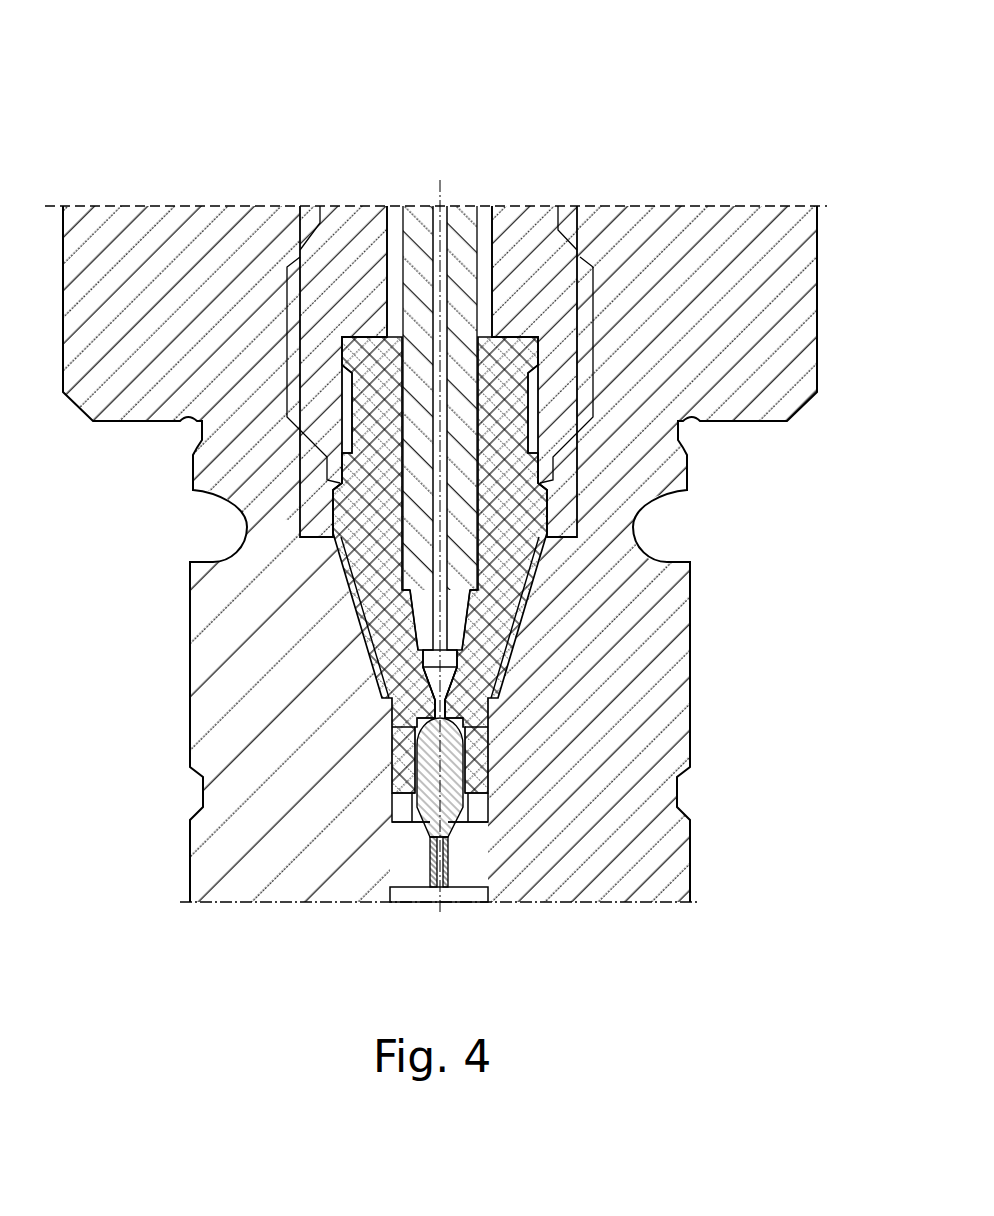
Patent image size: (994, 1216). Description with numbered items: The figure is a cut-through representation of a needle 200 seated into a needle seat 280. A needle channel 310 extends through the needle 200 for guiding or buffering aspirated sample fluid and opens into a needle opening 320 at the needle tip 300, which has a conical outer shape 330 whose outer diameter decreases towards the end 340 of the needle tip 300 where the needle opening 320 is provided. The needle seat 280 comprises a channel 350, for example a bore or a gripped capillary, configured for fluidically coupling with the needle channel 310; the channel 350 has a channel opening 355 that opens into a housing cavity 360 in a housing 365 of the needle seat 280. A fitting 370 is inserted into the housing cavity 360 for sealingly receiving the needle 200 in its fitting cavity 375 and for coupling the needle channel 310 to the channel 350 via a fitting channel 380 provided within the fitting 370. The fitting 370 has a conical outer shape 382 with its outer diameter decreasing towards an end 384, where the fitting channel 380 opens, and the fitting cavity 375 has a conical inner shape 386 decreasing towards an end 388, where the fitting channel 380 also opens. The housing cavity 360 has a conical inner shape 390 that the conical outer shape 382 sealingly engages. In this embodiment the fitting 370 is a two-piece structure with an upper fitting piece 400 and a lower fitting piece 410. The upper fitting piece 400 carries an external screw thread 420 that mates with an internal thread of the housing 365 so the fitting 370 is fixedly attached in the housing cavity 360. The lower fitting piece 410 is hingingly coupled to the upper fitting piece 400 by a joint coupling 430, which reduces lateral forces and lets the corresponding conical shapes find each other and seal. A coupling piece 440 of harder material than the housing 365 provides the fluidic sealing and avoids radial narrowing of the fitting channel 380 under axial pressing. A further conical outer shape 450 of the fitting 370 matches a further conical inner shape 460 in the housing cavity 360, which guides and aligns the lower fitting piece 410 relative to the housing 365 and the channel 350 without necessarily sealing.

The needle 200 is at (462, 210).
The needle seat 280 is at (715, 90).
The needle tip 300 is at (452, 568).
The needle channel 310 is at (443, 208).
The needle opening 320 is at (497, 712).
The conical outer shape 330 is at (387, 534).
The end of the needle tip 340 is at (433, 637).
The channel 350 is at (443, 893).
The channel opening 355 is at (443, 838).
The housing cavity 360 is at (306, 213).
The housing 365 is at (122, 408).
The fitting 370 is at (357, 213).
The fitting cavity 375 is at (395, 213).
The fitting channel 380 is at (492, 744).
The conical outer shape 382 is at (453, 827).
The end of the fitting 384 is at (430, 668).
The conical inner shape 386 is at (462, 605).
The end of the fitting cavity 388 is at (421, 700).
The conical inner shape 390 is at (448, 825).
The upper fitting piece 400 is at (533, 215).
The lower fitting piece 410 is at (548, 509).
The external screw thread 420 is at (590, 260).
The joint coupling 430 is at (337, 342).
The coupling piece 440 is at (491, 760).
The further conical outer shape 450 is at (458, 650).
The further conical inner shape 460 is at (496, 710).